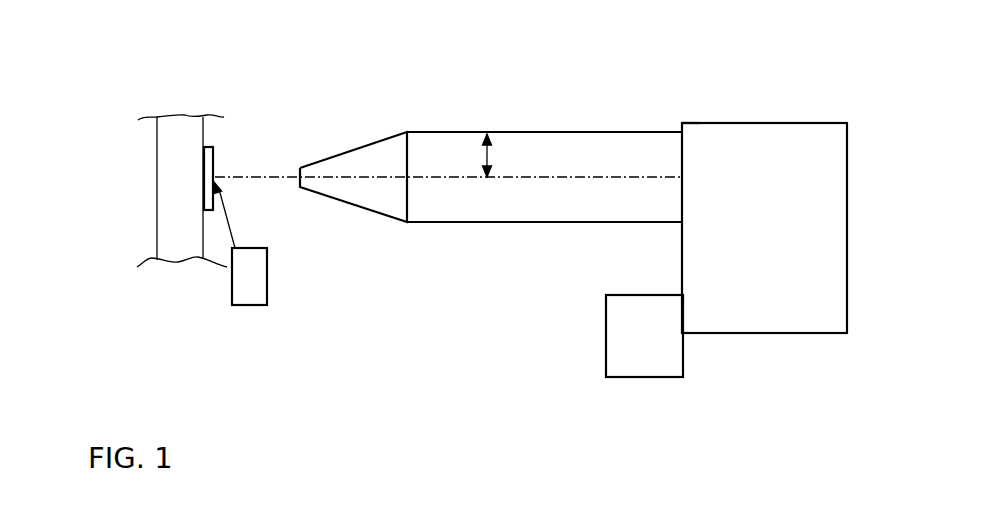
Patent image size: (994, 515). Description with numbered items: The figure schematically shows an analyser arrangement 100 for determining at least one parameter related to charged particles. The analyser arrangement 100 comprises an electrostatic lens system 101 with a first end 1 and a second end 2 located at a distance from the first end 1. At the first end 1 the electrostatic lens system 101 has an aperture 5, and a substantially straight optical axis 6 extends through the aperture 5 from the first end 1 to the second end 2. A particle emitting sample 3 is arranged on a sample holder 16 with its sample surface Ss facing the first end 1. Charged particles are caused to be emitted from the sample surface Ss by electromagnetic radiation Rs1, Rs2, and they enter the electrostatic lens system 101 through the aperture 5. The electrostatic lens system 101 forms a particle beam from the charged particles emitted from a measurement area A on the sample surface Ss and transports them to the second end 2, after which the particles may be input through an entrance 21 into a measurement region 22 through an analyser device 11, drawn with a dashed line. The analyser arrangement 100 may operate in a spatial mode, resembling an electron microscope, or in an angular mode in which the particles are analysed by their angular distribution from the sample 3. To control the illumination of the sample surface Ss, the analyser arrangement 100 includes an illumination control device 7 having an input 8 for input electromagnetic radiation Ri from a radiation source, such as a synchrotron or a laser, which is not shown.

The first end 1 is at (310, 137).
The second end 2 is at (680, 105).
The particle emitting sample 3 is at (200, 162).
The aperture 5 is at (300, 177).
The optical axis 6 is at (588, 178).
The illumination control device 7 is at (245, 285).
The input 8 is at (247, 305).
The analyser device 11 is at (613, 335).
The sample holder 16 is at (170, 210).
The entrance 21 is at (682, 177).
The measurement region 22 is at (762, 360).
The analyser arrangement 100 is at (737, 87).
The electrostatic lens system 101 is at (499, 252).
The measurement area A is at (217, 177).
The sample surface Ss is at (213, 158).
The input electromagnetic radiation Ri is at (250, 313).
The electromagnetic radiation Rs1 is at (227, 224).
The electromagnetic radiation Rs2 is at (347, 296).